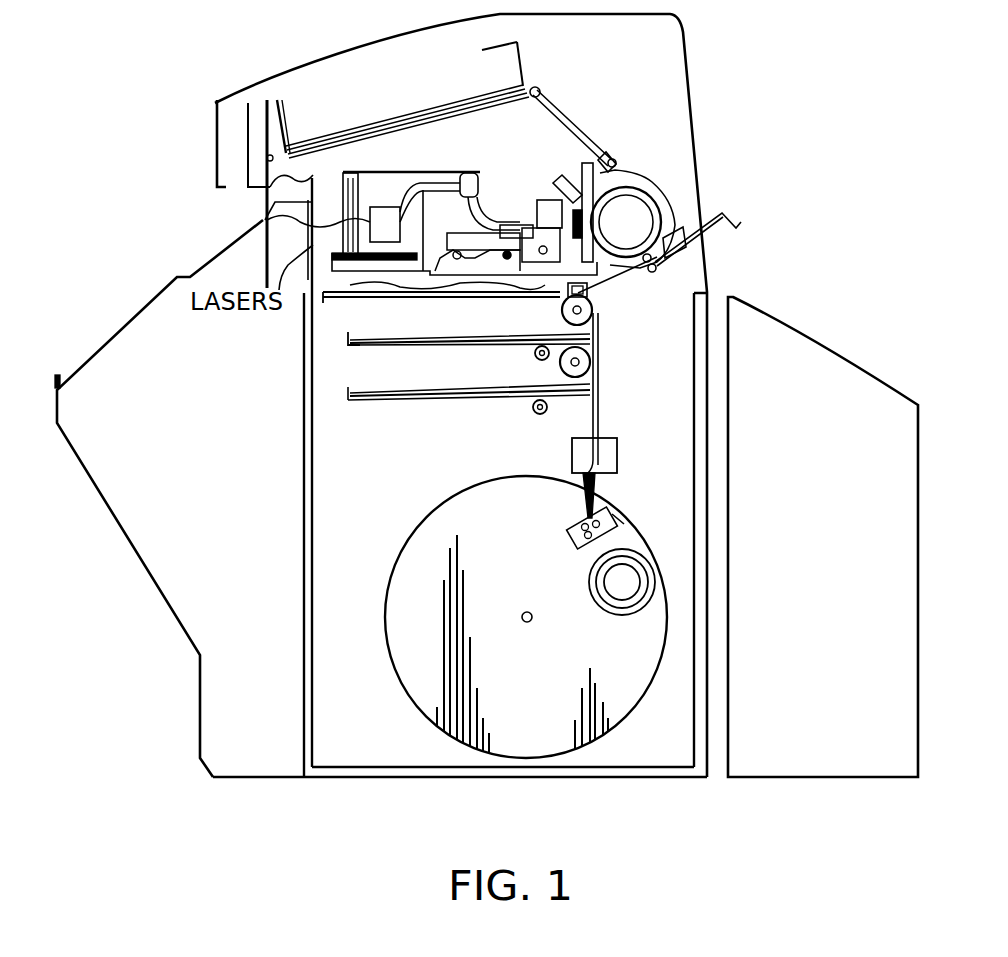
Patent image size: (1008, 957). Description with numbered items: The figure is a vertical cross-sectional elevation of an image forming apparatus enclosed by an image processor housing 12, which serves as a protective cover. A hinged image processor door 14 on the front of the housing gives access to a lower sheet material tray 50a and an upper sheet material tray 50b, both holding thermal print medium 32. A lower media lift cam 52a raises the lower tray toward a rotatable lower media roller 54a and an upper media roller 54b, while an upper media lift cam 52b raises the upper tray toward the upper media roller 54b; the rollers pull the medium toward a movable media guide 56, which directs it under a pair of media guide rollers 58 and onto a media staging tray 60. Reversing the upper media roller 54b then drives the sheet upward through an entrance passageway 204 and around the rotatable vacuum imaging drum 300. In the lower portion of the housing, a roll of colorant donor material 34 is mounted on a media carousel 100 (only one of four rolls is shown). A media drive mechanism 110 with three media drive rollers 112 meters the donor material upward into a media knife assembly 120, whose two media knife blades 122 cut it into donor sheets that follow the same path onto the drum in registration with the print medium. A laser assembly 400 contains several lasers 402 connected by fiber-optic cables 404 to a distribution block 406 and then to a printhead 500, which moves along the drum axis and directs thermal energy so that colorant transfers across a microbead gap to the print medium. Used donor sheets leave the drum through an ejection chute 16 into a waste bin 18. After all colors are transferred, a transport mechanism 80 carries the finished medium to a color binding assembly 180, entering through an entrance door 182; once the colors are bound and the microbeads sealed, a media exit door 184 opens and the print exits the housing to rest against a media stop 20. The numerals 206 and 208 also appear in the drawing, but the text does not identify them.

The image processor housing 12 is at (282, 62).
The image processor door 14 is at (157, 590).
The ejection chute 16 is at (727, 218).
The waste bin 18 is at (805, 337).
The media stop 20 is at (60, 380).
The thermal print medium 32 is at (420, 338).
The colorant donor material 34 is at (622, 592).
The lower sheet material tray 50a is at (312, 410).
The upper sheet material tray 50b is at (348, 393).
The lower media lift cam 52a is at (532, 408).
The upper media lift cam 52b is at (535, 358).
The lower media roller 54a is at (600, 378).
The upper media roller 54b is at (598, 315).
The media guide 56 is at (597, 297).
The media guide rollers 58 is at (560, 307).
The media staging tray 60 is at (310, 300).
The transport mechanism 80 is at (587, 128).
The media carousel 100 is at (407, 698).
The media drive mechanism 110 is at (622, 522).
The media drive rollers 112 is at (573, 530).
The media knife assembly 120 is at (617, 445).
The media knife blades 122 is at (600, 473).
The color binding assembly 180 is at (470, 98).
The entrance door 182 is at (520, 70).
The media exit door 184 is at (289, 136).
The entrance passageway 204 is at (660, 282).
The tray guide 206 is at (347, 340).
The media plate 208 is at (473, 294).
The vacuum imaging drum 300 is at (630, 215).
The laser assembly 400 is at (217, 167).
The lasers 402 is at (265, 220).
The fiber-optic cables 404 is at (433, 125).
The distribution block 406 is at (462, 112).
The printhead 500 is at (614, 156).